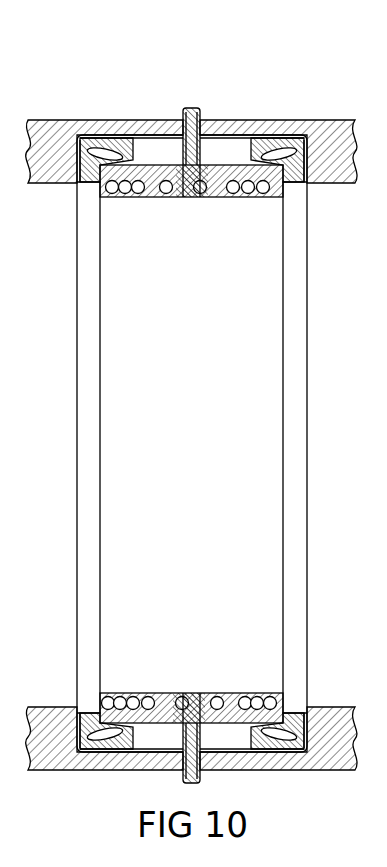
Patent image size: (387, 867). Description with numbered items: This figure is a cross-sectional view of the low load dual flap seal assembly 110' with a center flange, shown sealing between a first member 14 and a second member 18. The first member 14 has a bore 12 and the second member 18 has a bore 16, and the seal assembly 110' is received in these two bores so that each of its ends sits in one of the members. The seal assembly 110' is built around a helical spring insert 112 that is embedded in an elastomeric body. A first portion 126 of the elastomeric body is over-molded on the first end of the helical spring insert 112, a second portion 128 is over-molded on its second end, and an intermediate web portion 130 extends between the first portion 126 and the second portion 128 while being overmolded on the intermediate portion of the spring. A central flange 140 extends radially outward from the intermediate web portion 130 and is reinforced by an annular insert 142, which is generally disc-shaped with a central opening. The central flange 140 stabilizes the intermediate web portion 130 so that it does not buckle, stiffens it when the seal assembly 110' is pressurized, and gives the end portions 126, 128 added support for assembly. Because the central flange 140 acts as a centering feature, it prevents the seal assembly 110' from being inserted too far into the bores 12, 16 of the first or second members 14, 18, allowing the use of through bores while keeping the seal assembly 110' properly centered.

The seal assembly 110' is at (187, 392).
The second member 18 is at (284, 121).
The first member 14 is at (115, 121).
The bore 16 is at (238, 143).
The bore 12 is at (153, 143).
The intermediate web portion 130 is at (193, 198).
The central flange 140 is at (218, 100).
The helical spring insert 112 is at (192, 675).
The second portion 128 is at (110, 678).
The first portion 126 is at (271, 670).
The annular insert 142 is at (200, 778).